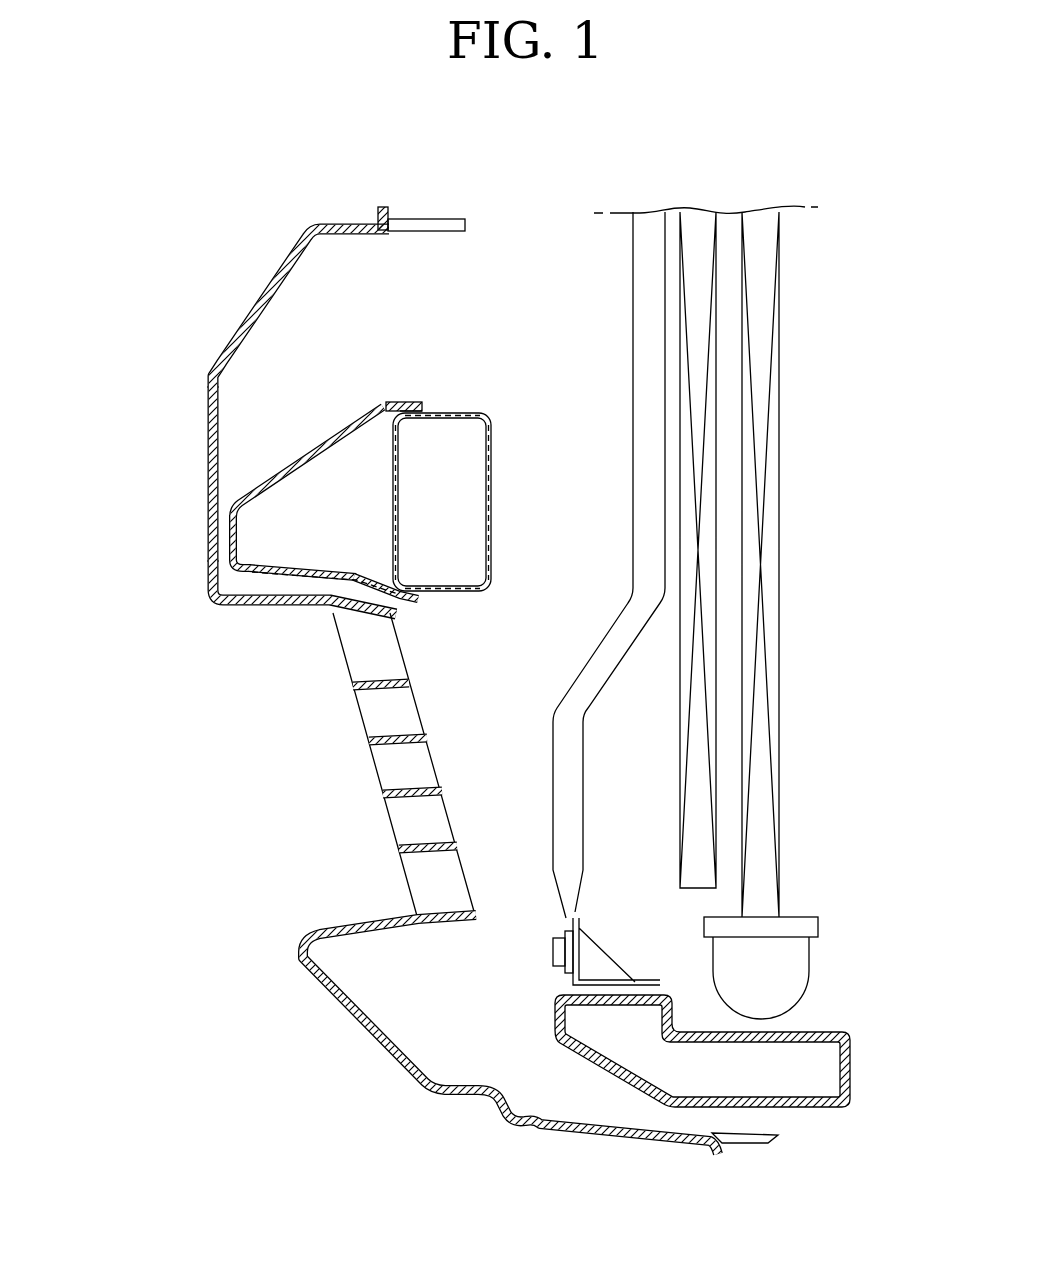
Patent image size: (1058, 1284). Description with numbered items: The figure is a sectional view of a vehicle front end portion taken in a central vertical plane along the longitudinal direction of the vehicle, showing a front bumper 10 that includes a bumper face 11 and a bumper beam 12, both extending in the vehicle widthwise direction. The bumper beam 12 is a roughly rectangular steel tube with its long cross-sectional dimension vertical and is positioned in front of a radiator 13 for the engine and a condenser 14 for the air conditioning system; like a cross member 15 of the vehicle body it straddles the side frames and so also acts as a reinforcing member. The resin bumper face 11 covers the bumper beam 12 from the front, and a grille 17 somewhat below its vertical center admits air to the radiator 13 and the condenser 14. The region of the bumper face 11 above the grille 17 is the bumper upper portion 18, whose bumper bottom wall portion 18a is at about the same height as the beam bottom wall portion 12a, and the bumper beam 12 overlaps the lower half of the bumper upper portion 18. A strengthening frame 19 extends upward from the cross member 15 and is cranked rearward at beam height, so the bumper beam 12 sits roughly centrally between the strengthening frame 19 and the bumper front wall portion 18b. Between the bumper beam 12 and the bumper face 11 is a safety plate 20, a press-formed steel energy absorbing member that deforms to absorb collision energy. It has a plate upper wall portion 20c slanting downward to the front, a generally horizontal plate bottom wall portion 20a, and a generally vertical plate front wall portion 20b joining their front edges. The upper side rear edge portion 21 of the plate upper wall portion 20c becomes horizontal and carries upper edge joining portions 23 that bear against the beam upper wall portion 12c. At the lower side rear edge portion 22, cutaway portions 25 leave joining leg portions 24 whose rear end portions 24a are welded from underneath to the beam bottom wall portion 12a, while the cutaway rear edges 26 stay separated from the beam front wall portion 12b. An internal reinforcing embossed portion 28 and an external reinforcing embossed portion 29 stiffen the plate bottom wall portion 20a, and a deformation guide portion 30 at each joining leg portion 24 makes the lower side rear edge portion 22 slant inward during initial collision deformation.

The front bumper 10 is at (237, 246).
The bumper face 11 is at (255, 443).
The bumper beam 12 is at (490, 413).
The beam bottom wall portion 12a is at (463, 596).
The beam front wall portion 12b is at (394, 452).
The beam upper wall portion 12c is at (454, 413).
The radiator 13 is at (782, 376).
The condenser 14 is at (677, 702).
The cross member 15 is at (838, 1026).
The grille 17 is at (328, 615).
The bumper upper portion 18 is at (223, 327).
The bumper bottom wall portion 18a is at (263, 606).
The bumper front wall portion 18b is at (205, 475).
The strengthening frame 19 is at (632, 285).
The safety plate 20 is at (354, 416).
The plate bottom wall portion 20a is at (292, 606).
The plate front wall portion 20b is at (229, 545).
The plate upper wall portion 20c is at (272, 478).
The upper side rear edge portion 21 is at (397, 400).
The lower side rear edge portion 22 is at (383, 573).
The upper edge joining portion 23 is at (411, 400).
The joining leg portion 24 is at (552, 706).
The rear end portion of joining leg portion 24a is at (413, 615).
The cutaway portion 25 is at (352, 764).
The cutaway rear edge 26 is at (372, 750).
The internal reinforcing embossed portion 28 is at (298, 538).
The external reinforcing embossed portion 29 is at (300, 573).
The deformation guide portion 30 is at (370, 612).